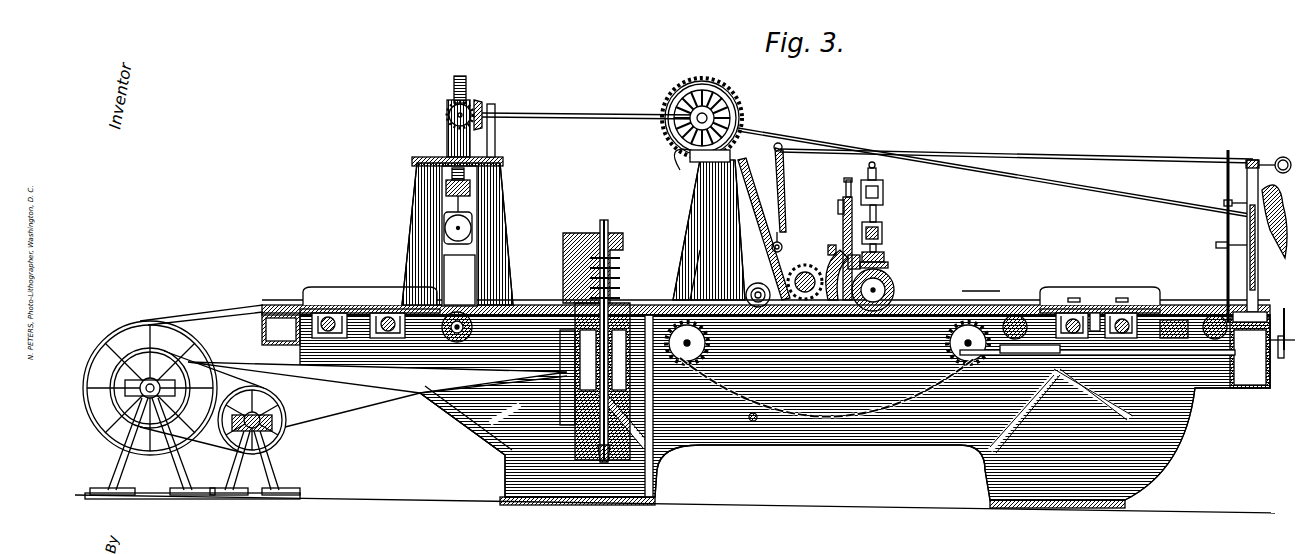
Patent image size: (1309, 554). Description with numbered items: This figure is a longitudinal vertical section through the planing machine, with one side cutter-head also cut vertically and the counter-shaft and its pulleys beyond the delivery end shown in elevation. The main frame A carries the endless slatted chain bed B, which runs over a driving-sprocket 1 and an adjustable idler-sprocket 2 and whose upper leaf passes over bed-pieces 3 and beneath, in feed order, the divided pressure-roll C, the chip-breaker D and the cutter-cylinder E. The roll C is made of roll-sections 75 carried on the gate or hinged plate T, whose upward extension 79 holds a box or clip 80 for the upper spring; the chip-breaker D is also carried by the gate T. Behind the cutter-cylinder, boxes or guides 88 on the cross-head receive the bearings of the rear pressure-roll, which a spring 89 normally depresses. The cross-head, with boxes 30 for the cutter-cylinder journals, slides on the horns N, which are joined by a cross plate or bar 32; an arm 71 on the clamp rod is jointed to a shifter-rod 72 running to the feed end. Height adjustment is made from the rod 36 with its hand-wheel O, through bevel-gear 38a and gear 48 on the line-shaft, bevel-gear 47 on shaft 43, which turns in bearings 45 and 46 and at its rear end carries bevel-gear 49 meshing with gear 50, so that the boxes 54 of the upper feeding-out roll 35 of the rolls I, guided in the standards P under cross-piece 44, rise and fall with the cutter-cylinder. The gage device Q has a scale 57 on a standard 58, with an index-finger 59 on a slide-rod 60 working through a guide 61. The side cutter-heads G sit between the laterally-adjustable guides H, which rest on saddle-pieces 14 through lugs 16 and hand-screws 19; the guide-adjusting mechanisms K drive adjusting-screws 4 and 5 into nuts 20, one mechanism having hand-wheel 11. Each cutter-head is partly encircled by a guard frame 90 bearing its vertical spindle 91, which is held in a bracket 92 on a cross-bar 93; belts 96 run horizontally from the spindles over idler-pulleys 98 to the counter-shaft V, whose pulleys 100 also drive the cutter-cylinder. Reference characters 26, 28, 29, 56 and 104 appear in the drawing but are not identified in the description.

The driving-sprocket 1 is at (687, 343).
The adjustable idler-sprocket 2 is at (968, 343).
The bed-pieces 3 is at (882, 230).
The adjusting-screws 4 is at (1095, 316).
The adjusting-screws 5 is at (328, 317).
The hand-wheel 11 is at (1294, 322).
The saddle-pieces 14 is at (310, 305).
The pendent lugs or lips 16 is at (350, 308).
The hand-screws 19 is at (1074, 298).
The nut 20 is at (724, 338).
The slide 26 is at (1067, 355).
The rod 28 is at (1208, 355).
The crank handle 29 is at (1283, 362).
The boxes 30 is at (828, 250).
The cross plate or bar 32 is at (740, 170).
The upper pressure-roll 35 is at (468, 235).
The rod 36 is at (994, 172).
The bevel-gear 38a is at (720, 82).
The shaft 43 is at (591, 106).
The cross-piece 44 is at (430, 160).
The bearing 45 is at (680, 150).
The bearing 46 is at (496, 150).
The bevel-gear 47 is at (690, 80).
The bevel-gear 48 is at (716, 110).
The bevel-gear 49 is at (480, 104).
The bevel-gear 50 is at (452, 110).
The boxes 54 is at (445, 232).
The adjusting screw 56 is at (456, 78).
The scale 57 is at (1257, 270).
The standard 58 is at (1257, 190).
The pointer or index-finger 59 is at (1227, 252).
The slide-rod 60 is at (1222, 182).
The guide 61 is at (1246, 200).
The arm 71 is at (785, 178).
The shifter-rod 72 is at (1016, 150).
The roll-sections 75 is at (878, 280).
The upward extension 79 is at (845, 196).
The box or clip 80 is at (884, 188).
The boxes or guides 88 is at (698, 271).
The spring 89 is at (775, 242).
The frame or guard 90 is at (580, 268).
The cutter-head spindle 91 is at (602, 232).
The bracket 92 is at (505, 455).
The cross-bar 93 is at (545, 318).
The belts 96 is at (377, 368).
The idler-pulleys 98 is at (280, 410).
The pulleys 100 is at (280, 379).
The pin 104 is at (753, 421).
The main frame A is at (1164, 412).
The endless slatted chain bed B is at (833, 412).
The divided pressure-roll C is at (879, 290).
The chip-breaker D is at (832, 258).
The cutter-cylinder E is at (803, 270).
The rotary side cutter-heads G is at (612, 283).
The laterally-adjustable guides H is at (981, 284).
The feeding-out rolls I is at (470, 265).
The guide-adjusting mechanisms K is at (745, 290).
The horns N is at (700, 205).
The hand-wheel O is at (1280, 207).
The standards P is at (402, 218).
The gage device Q is at (1218, 243).
The gate or hinged plate T is at (843, 225).
The counter-shaft V is at (160, 355).